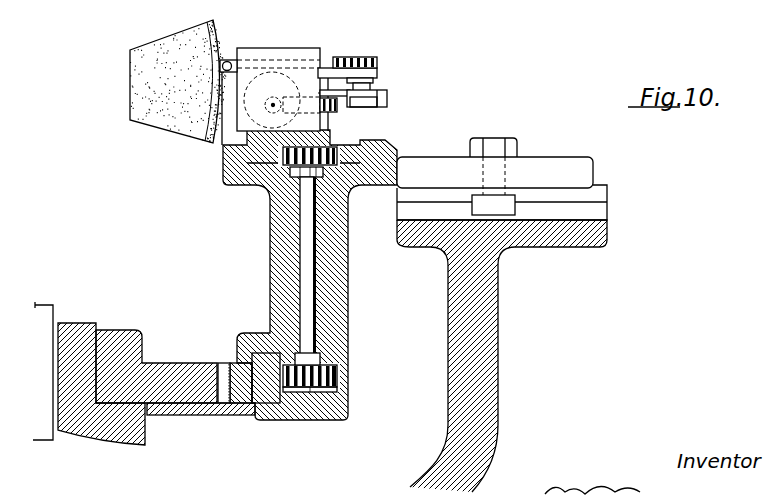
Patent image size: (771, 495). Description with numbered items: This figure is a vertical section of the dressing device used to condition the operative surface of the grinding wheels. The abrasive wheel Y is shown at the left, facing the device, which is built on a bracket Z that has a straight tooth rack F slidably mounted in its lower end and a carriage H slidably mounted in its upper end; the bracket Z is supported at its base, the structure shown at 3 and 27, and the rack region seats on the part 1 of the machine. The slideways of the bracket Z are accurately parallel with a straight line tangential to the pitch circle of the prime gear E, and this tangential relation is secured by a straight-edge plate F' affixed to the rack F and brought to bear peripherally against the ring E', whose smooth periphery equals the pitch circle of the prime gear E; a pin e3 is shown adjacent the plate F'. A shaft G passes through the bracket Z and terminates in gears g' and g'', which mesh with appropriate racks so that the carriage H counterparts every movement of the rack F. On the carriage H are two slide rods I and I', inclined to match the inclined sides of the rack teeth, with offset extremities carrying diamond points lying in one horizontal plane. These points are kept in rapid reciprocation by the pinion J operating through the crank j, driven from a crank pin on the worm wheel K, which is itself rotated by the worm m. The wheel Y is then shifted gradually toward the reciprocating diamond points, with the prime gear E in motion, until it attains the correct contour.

The grinding wheel Y is at (167, 44).
The slide rod I is at (275, 83).
The slide rod I' is at (348, 56).
The pinion J is at (373, 58).
The crank j is at (388, 99).
The worm m is at (272, 102).
The worm wheel K is at (335, 106).
The gear g'' is at (347, 143).
The carriage H is at (247, 150).
The shaft G is at (306, 246).
The bracket Z is at (349, 286).
The frame plate 27 is at (604, 211).
The base block 3 is at (604, 229).
The machine frame 1 is at (82, 323).
The prime gear E is at (156, 366).
The pin e3 is at (224, 363).
The ring E' is at (201, 427).
The straight-edge plate F' is at (237, 407).
The straight tooth rack F is at (267, 402).
The gear g' is at (334, 372).